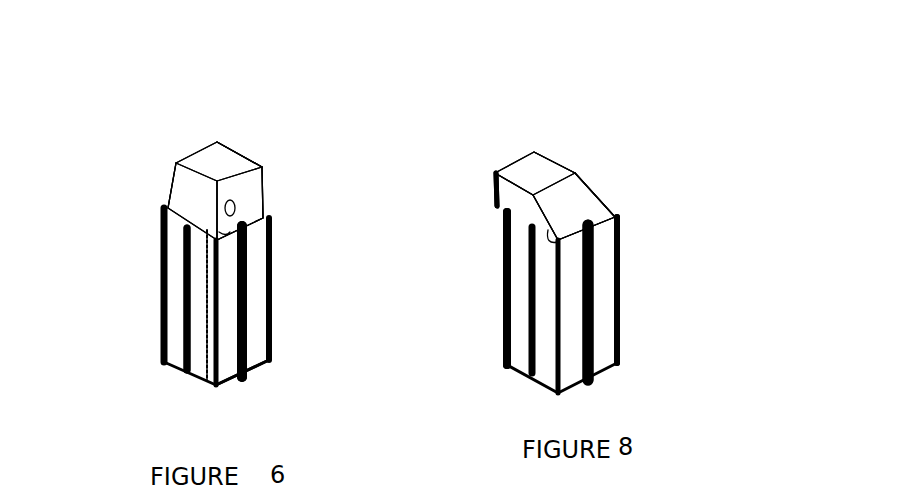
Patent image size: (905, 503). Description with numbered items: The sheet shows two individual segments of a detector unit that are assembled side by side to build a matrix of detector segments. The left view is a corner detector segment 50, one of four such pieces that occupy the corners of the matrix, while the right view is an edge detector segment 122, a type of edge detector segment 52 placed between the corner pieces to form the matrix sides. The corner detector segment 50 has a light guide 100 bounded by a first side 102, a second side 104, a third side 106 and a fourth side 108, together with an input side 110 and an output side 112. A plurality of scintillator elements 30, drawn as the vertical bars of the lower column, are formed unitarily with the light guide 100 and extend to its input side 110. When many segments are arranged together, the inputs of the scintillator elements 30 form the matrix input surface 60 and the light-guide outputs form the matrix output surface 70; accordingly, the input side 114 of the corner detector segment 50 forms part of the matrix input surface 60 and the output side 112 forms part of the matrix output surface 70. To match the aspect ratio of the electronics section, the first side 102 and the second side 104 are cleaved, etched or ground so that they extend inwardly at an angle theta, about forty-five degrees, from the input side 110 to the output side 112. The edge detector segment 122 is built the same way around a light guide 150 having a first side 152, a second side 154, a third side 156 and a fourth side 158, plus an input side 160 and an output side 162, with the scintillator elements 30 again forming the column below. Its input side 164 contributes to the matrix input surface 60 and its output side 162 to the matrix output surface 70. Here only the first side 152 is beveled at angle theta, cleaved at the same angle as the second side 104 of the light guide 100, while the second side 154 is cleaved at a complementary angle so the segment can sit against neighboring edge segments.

In FIG. 6, the scintillator elements 30 is at (173, 335).
In FIG. 8, the scintillator elements 30 is at (607, 347).
In FIG. 6, the corner detector segment 50 is at (279, 115).
In FIG. 8, the edge detector segment 52 is at (638, 115).
In FIG. 6, the matrix input surface 60 is at (188, 388).
In FIG. 6, the matrix output surface 70 is at (278, 88).
In FIG. 6, the light guide 100 is at (226, 134).
In FIG. 6, the first side 102 is at (178, 207).
In FIG. 6, the second side 104 is at (250, 210).
In FIG. 6, the third side 106 is at (250, 150).
In FIG. 6, the fourth side 108 is at (168, 188).
In FIG. 6, the input side 110 is at (273, 218).
In FIG. 6, the output side 112 is at (191, 160).
In FIG. 6, the input side 114 is at (284, 363).
In FIG. 8, the edge detector segment 122 is at (623, 87).
In FIG. 8, the light guide 150 is at (596, 170).
In FIG. 8, the first side 152 is at (583, 203).
In FIG. 8, the second side 154 is at (570, 170).
In FIG. 8, the third side 156 is at (497, 172).
In FIG. 8, the fourth side 158 is at (520, 227).
In FIG. 8, the input side 160 is at (617, 217).
In FIG. 8, the output side 162 is at (533, 160).
In FIG. 8, the input side 164 is at (517, 397).